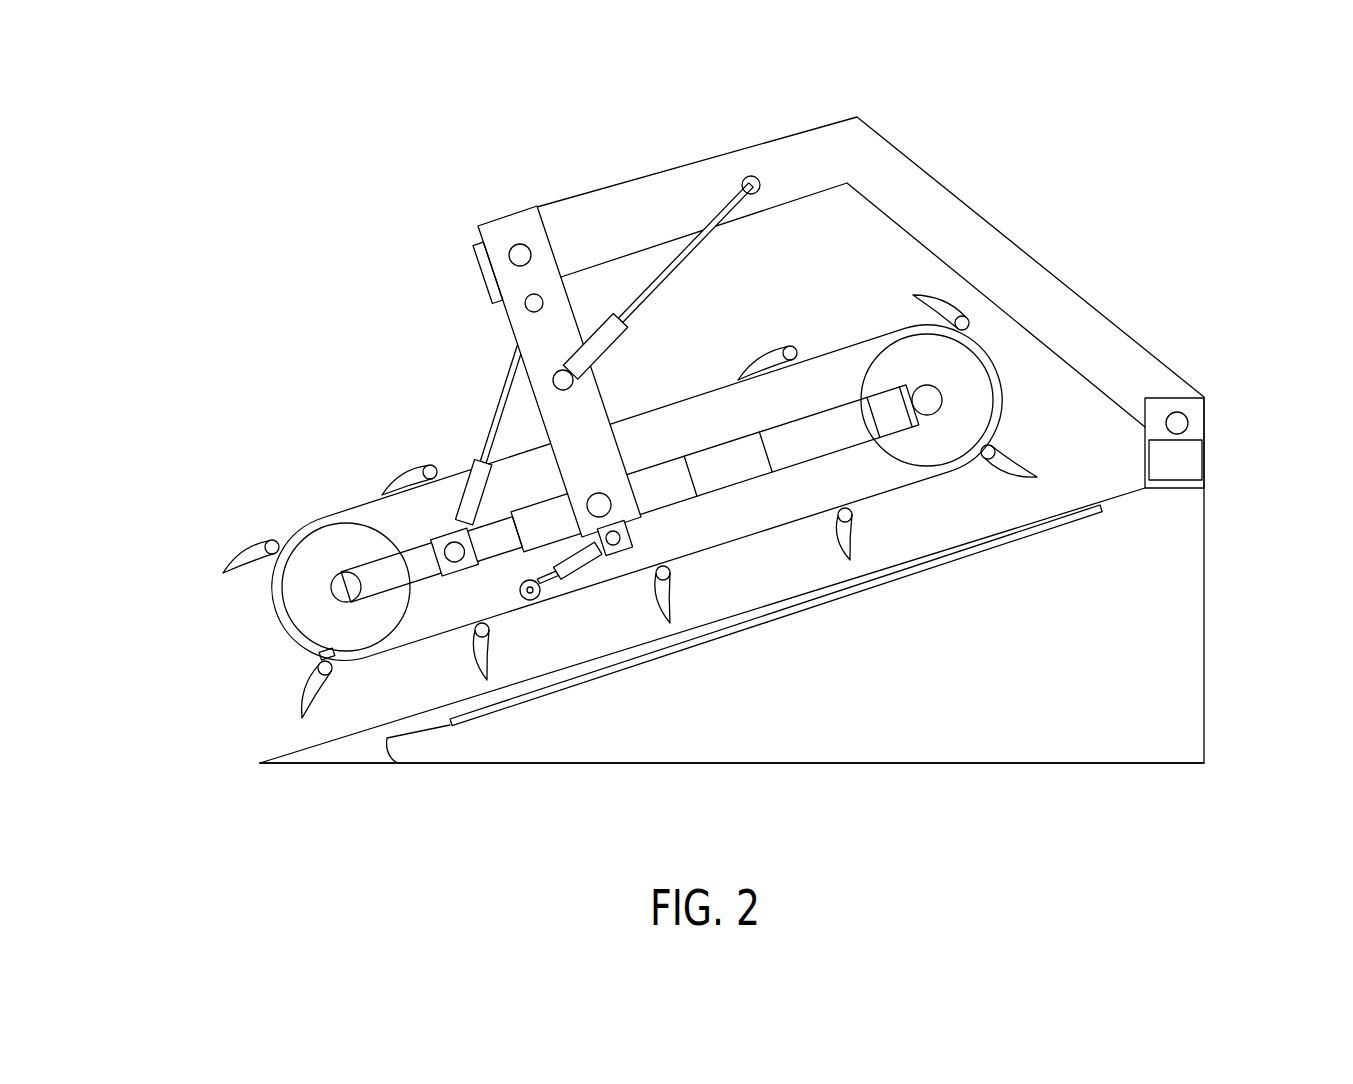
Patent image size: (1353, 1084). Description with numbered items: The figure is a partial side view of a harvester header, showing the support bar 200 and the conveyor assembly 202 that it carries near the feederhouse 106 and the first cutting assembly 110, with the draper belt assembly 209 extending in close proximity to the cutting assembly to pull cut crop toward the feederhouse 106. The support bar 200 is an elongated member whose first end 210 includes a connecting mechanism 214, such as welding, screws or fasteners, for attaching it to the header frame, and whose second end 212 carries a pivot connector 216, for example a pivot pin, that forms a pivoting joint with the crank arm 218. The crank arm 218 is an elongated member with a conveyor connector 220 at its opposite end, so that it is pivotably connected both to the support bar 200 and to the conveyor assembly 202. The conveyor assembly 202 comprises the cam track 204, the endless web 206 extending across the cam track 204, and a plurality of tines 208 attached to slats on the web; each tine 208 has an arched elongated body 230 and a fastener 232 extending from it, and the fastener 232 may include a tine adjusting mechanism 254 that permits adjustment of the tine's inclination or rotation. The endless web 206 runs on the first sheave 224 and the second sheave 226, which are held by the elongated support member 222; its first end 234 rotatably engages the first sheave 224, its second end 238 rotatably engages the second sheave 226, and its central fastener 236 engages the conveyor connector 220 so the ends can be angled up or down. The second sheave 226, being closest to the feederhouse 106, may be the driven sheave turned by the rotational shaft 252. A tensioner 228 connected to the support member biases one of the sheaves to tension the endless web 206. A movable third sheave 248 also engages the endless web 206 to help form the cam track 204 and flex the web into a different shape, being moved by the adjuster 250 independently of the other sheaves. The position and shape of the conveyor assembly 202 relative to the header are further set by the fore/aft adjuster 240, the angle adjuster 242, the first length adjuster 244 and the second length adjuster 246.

The feederhouse 106 is at (1182, 463).
The first cutting assembly 110 is at (320, 763).
The support bar 200 is at (950, 230).
The conveyor assembly 202 is at (262, 400).
The cam track 204 is at (245, 615).
The endless web 206 is at (278, 617).
The tines 208 is at (222, 538).
The draper belt assembly 209 is at (947, 440).
The first end 210 is at (1222, 393).
The second end 212 is at (446, 211).
The connecting mechanism 214 is at (1177, 415).
The pivot connector 216 is at (520, 255).
The crank arm 218 is at (548, 318).
The conveyor connector 220 is at (599, 505).
The elongated support member 222 is at (832, 425).
The first sheave 224 is at (347, 537).
The second sheave 226 is at (955, 465).
The tensioner 228 is at (975, 340).
The elongated body 230 is at (227, 573).
The fastener 232 is at (272, 540).
The first end 234 is at (382, 613).
The central fastener 236 is at (656, 542).
The second end 238 is at (917, 444).
The fore/aft adjuster 240 is at (612, 330).
The angle adjuster 242 is at (452, 478).
The first length adjuster 244 is at (498, 560).
The second length adjuster 246 is at (850, 505).
The third sheave 248 is at (531, 600).
The adjuster 250 is at (597, 571).
The rotational shaft 252 is at (1140, 490).
The tine adjusting mechanism 254 is at (312, 655).